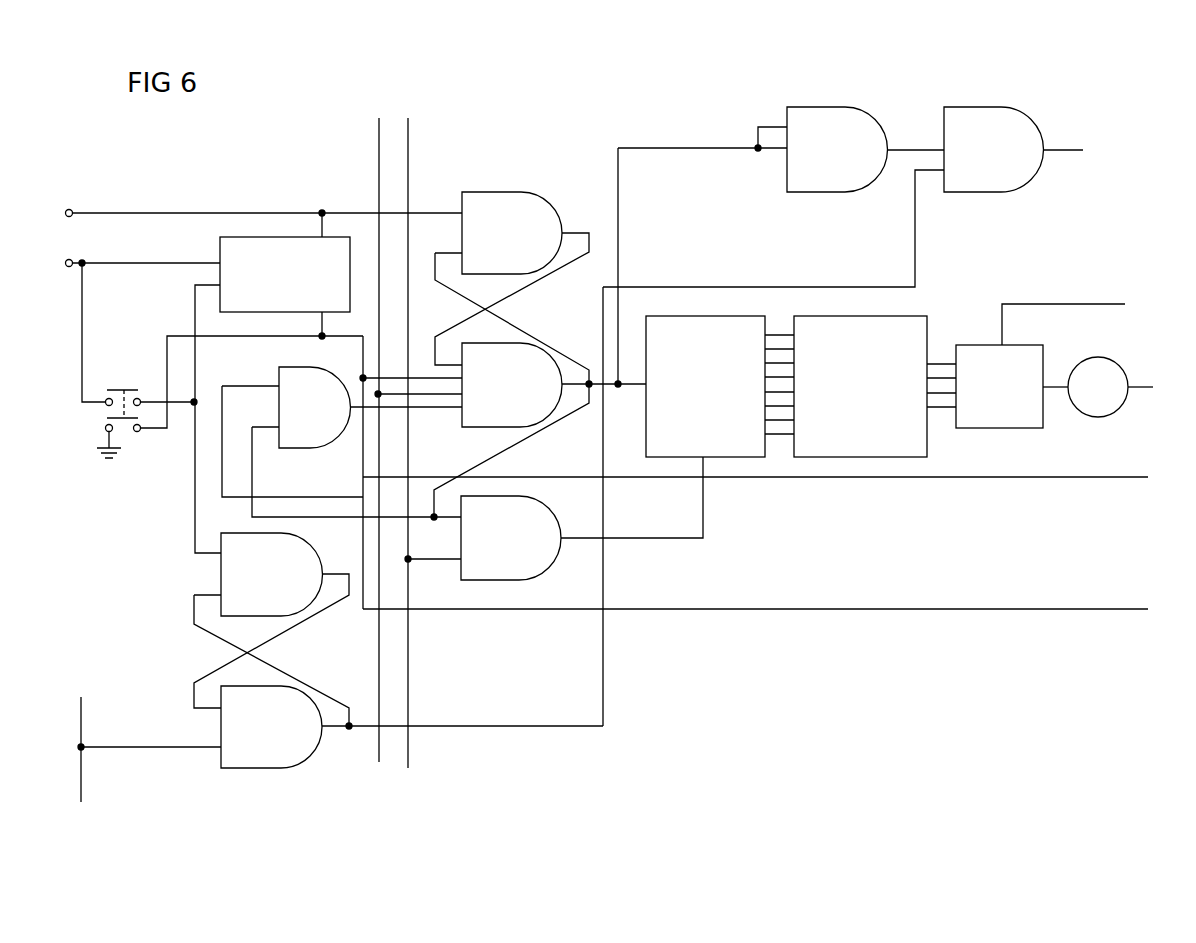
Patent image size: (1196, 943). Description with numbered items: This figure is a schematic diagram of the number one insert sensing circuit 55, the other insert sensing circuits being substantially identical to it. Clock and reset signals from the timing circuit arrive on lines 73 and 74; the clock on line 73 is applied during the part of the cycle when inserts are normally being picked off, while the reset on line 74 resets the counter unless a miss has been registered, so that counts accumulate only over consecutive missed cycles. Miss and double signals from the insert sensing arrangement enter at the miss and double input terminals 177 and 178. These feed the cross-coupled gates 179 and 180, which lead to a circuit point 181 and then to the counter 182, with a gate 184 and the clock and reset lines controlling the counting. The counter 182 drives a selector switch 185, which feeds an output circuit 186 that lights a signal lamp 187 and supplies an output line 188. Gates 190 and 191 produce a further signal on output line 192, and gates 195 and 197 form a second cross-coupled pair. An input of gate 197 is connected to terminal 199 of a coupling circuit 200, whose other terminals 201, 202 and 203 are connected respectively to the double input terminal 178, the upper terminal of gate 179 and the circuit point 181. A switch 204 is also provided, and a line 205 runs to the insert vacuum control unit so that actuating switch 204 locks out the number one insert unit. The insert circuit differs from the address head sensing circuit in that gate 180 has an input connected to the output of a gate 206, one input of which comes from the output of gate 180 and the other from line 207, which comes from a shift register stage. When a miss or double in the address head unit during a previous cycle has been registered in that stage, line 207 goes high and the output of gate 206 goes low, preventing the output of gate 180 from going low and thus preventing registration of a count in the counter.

The insert sensing circuit 55 is at (1086, 84).
The clock line 73 is at (379, 140).
The reset line 74 is at (408, 142).
The miss input terminal 177 is at (75, 211).
The double input terminal 178 is at (75, 261).
The gate 179 is at (539, 208).
The gate 180 is at (530, 362).
The circuit point 181 is at (363, 378).
The counter 182 is at (708, 318).
The gate 184 is at (527, 567).
The selector switch 185 is at (868, 318).
The output circuit 186 is at (1017, 353).
The signal lamp 187 is at (1105, 372).
The output line 188 is at (1045, 304).
The gate 190 is at (827, 112).
The gate 191 is at (983, 115).
The output line 192 is at (1068, 148).
The gate 195 is at (300, 749).
The gate 197 is at (293, 548).
The terminal of coupling circuit 199 is at (195, 304).
The coupling circuit 200 is at (266, 240).
The terminal of coupling circuit 201 is at (197, 265).
The terminal of coupling circuit 202 is at (318, 194).
The terminal of coupling circuit 203 is at (320, 324).
The switch 204 is at (110, 382).
The line 205 is at (916, 479).
The gate 206 is at (327, 432).
The line 207 is at (701, 609).